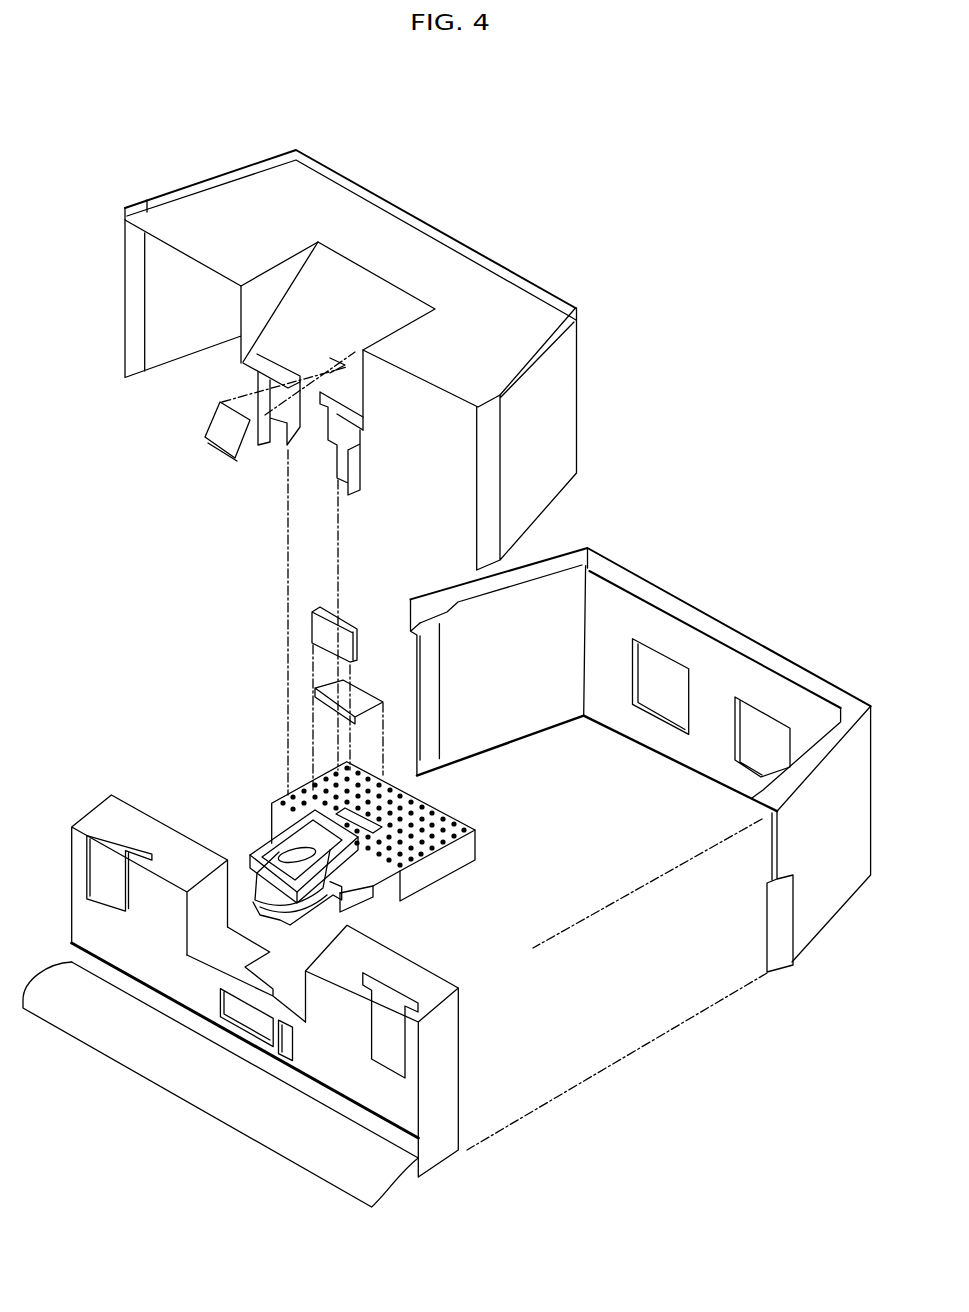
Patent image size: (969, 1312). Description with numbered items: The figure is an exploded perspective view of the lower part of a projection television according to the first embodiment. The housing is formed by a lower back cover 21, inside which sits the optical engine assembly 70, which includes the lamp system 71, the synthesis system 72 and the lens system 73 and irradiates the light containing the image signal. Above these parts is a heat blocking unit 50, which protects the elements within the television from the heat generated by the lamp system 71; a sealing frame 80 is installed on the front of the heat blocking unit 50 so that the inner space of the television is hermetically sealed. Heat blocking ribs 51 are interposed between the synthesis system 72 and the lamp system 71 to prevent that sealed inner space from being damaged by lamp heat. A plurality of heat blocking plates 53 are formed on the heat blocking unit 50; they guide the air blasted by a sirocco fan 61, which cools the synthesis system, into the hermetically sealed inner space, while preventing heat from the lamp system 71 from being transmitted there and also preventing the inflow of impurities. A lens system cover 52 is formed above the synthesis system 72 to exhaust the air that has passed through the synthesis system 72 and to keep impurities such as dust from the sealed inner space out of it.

The lower back cover 21 is at (734, 624).
The heat blocking unit 50 is at (200, 178).
The heat blocking ribs 51 is at (357, 457).
The lens system cover 52 is at (287, 815).
The heat blocking plates 53 is at (340, 690).
The sirocco fan 61 is at (256, 904).
The optical engine assembly 70 is at (414, 886).
The lamp system 71 is at (427, 845).
The synthesis system 72 is at (380, 842).
The lens system 73 is at (400, 898).
The sealing frame 80 is at (455, 1093).